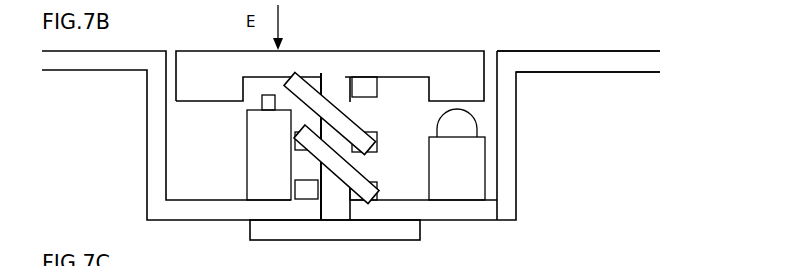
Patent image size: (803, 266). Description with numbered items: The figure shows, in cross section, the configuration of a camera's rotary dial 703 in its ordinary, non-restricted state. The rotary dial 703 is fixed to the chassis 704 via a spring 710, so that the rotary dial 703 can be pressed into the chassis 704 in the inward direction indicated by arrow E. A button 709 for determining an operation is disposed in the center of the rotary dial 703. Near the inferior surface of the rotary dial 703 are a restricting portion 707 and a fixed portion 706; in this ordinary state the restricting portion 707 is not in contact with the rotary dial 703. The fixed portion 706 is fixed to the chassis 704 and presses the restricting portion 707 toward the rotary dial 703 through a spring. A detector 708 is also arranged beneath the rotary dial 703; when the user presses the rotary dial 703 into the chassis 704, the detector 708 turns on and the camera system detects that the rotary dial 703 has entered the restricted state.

The rotary dial 703 is at (339, 58).
The chassis 704 is at (598, 67).
The fixed portion 706 is at (468, 172).
The restricting portion 707 is at (459, 129).
The detector 708 is at (263, 109).
The button 709 is at (335, 243).
The spring 710 is at (340, 171).